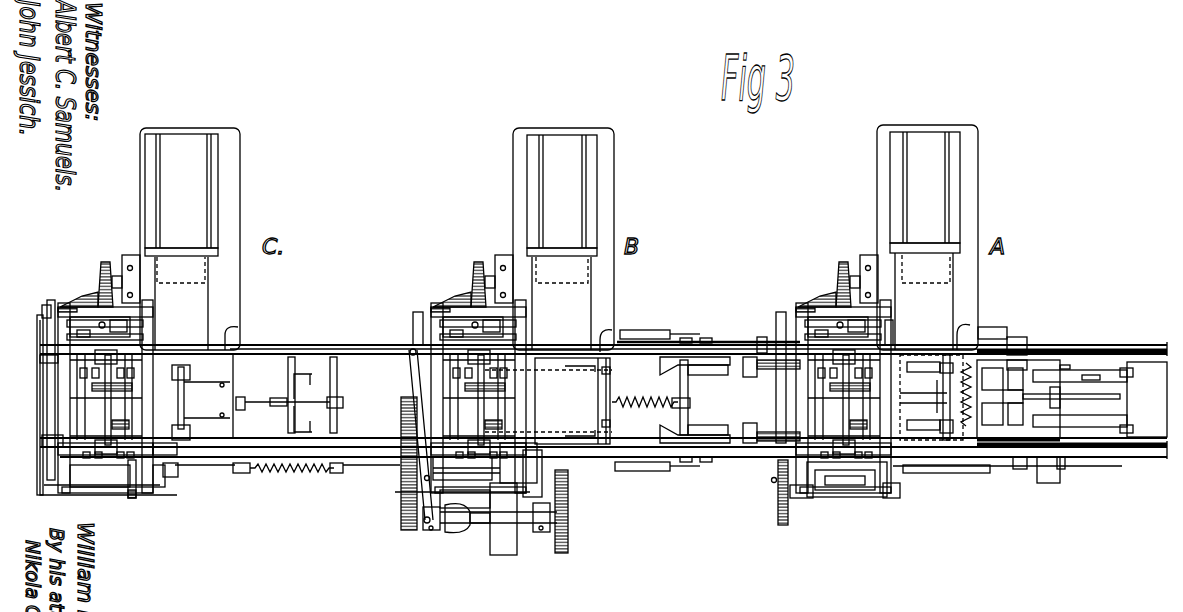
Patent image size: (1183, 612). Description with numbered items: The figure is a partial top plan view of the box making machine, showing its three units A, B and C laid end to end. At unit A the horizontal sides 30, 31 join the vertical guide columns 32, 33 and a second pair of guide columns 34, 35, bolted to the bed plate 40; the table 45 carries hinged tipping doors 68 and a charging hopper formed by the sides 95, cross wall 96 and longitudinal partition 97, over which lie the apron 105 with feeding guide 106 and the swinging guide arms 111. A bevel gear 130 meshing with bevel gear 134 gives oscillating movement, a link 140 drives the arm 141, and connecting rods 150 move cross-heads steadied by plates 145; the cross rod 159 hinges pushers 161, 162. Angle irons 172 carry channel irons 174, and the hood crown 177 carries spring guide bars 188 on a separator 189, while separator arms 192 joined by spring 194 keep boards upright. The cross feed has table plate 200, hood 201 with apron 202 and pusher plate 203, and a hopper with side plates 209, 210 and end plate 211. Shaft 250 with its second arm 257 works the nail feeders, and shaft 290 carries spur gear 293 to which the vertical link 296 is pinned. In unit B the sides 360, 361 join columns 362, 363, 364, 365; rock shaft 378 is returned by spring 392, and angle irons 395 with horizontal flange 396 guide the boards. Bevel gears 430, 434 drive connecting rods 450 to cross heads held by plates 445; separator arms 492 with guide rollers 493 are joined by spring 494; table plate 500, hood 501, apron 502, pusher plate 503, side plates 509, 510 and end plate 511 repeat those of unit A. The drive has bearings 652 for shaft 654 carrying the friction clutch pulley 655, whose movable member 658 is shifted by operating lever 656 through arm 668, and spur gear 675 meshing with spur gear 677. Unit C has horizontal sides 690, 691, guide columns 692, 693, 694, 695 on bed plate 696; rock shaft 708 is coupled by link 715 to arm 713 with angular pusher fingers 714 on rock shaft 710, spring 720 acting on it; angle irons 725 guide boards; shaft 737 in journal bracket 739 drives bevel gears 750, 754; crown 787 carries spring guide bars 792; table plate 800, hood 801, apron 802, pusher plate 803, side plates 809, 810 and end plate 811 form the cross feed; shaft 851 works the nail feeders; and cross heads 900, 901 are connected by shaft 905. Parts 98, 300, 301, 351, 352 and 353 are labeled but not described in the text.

The horizontal side 30 is at (1085, 460).
The horizontal side 31 is at (1135, 343).
The vertical guide column 32 is at (905, 498).
The vertical guide column 33 is at (898, 332).
The guide column 34 is at (808, 498).
The guide column 35 is at (778, 340).
The bed plate 40 is at (842, 490).
The table 45 is at (1097, 406).
The tipping door 68 is at (1018, 400).
The hopper side 95 is at (1092, 344).
The cross wall 96 is at (1066, 367).
The longitudinal partition 97 is at (1112, 381).
The shaft 98 is at (1063, 393).
The apron 105 is at (1147, 399).
The feeding guide 106 is at (1133, 373).
The swinging guide arm 111 is at (1016, 396).
The bevel gear 130 is at (840, 265).
The bevel gear 134 is at (823, 290).
The link 140 is at (1050, 485).
The arm 141 is at (1062, 470).
The plate 145 is at (1022, 335).
The connecting rod 150 is at (986, 328).
The cross rod 159 is at (933, 397).
The pusher 161 is at (946, 432).
The pusher 162 is at (945, 366).
The angle iron 172 is at (740, 378).
The channel iron 174 is at (768, 376).
The hood crown 177 is at (923, 396).
The spring guide bar 188 is at (925, 396).
The separator 189 is at (1004, 396).
The separator arm 192 is at (931, 399).
The spring 194 is at (960, 394).
The table plate 200 is at (978, 172).
The hood 201 is at (925, 187).
The apron 202 is at (925, 251).
The pusher plate 203 is at (926, 269).
The hopper side plate 209 is at (896, 300).
The hopper side plate 210 is at (960, 330).
The end plate 211 is at (922, 339).
The short horizontal shaft 250 is at (868, 486).
The second arm 257 is at (872, 497).
The shaft 290 is at (838, 496).
The spur gear 293 is at (777, 514).
The vertical link 296 is at (772, 488).
The nut 300 is at (847, 448).
The nut 301 is at (847, 355).
The head A 351 is at (942, 292).
The head B 352 is at (580, 281).
The head C 353 is at (208, 301).
The horizontal side 360 is at (735, 460).
The horizontal side 361 is at (756, 342).
The column 362 is at (542, 482).
The column 363 is at (525, 338).
The column 364 is at (376, 482).
The column 365 is at (420, 335).
The rock shaft 378 is at (690, 388).
The spring 392 is at (648, 398).
The angle iron 395 is at (603, 358).
The horizontal flange 396 is at (603, 446).
The bevel gear 430 is at (477, 266).
The bevel gear 434 is at (460, 290).
The plate 445 is at (698, 340).
The connecting rod 450 is at (628, 334).
The separator arm 492 is at (535, 366).
The guide roller 493 is at (483, 356).
The spring 494 is at (605, 404).
The table plate 500 is at (613, 177).
The hood 501 is at (562, 191).
The apron 502 is at (562, 250).
The pusher plate 503 is at (562, 288).
The hopper side plate 509 is at (533, 265).
The hopper side plate 510 is at (603, 330).
The end plate 511 is at (584, 335).
The bearing 652 is at (432, 536).
The short horizontal shaft 654 is at (470, 530).
The friction clutch pulley 655 is at (503, 519).
The operating lever 656 is at (452, 538).
The movable clutch member 658 is at (478, 530).
The arm 668 is at (412, 439).
The spur gear 675 is at (570, 522).
The spur gear 677 is at (570, 548).
The horizontal side 690 is at (366, 470).
The horizontal side 691 is at (360, 344).
The guide column 692 is at (160, 483).
The guide column 693 is at (152, 338).
The guide column 694 is at (62, 495).
The guide column 695 is at (52, 338).
The bed plate 696 is at (168, 497).
The rock shaft 708 is at (343, 388).
The rock shaft 710 is at (245, 392).
The arm 713 is at (258, 405).
The angular pusher finger 714 is at (308, 378).
The link 715 is at (294, 399).
The spring 720 is at (290, 476).
The angle iron 725 is at (44, 366).
The short longitudinal shaft 737 is at (76, 413).
The journal bracket 739 is at (50, 395).
The bevel gear 750 is at (104, 264).
The bevel gear 754 is at (86, 290).
The hood crown 787 is at (204, 398).
The spring guide bar 792 is at (188, 372).
The table plate 800 is at (240, 172).
The hood 801 is at (181, 191).
The apron 802 is at (184, 250).
The pusher plate 803 is at (205, 298).
The hopper side plate 809 is at (156, 320).
The hopper side plate 810 is at (228, 338).
The end plate 811 is at (196, 328).
The short horizontal shaft 851 is at (112, 488).
The cross head 900 is at (108, 448).
The cross head 901 is at (107, 359).
The shaft 905 is at (98, 413).